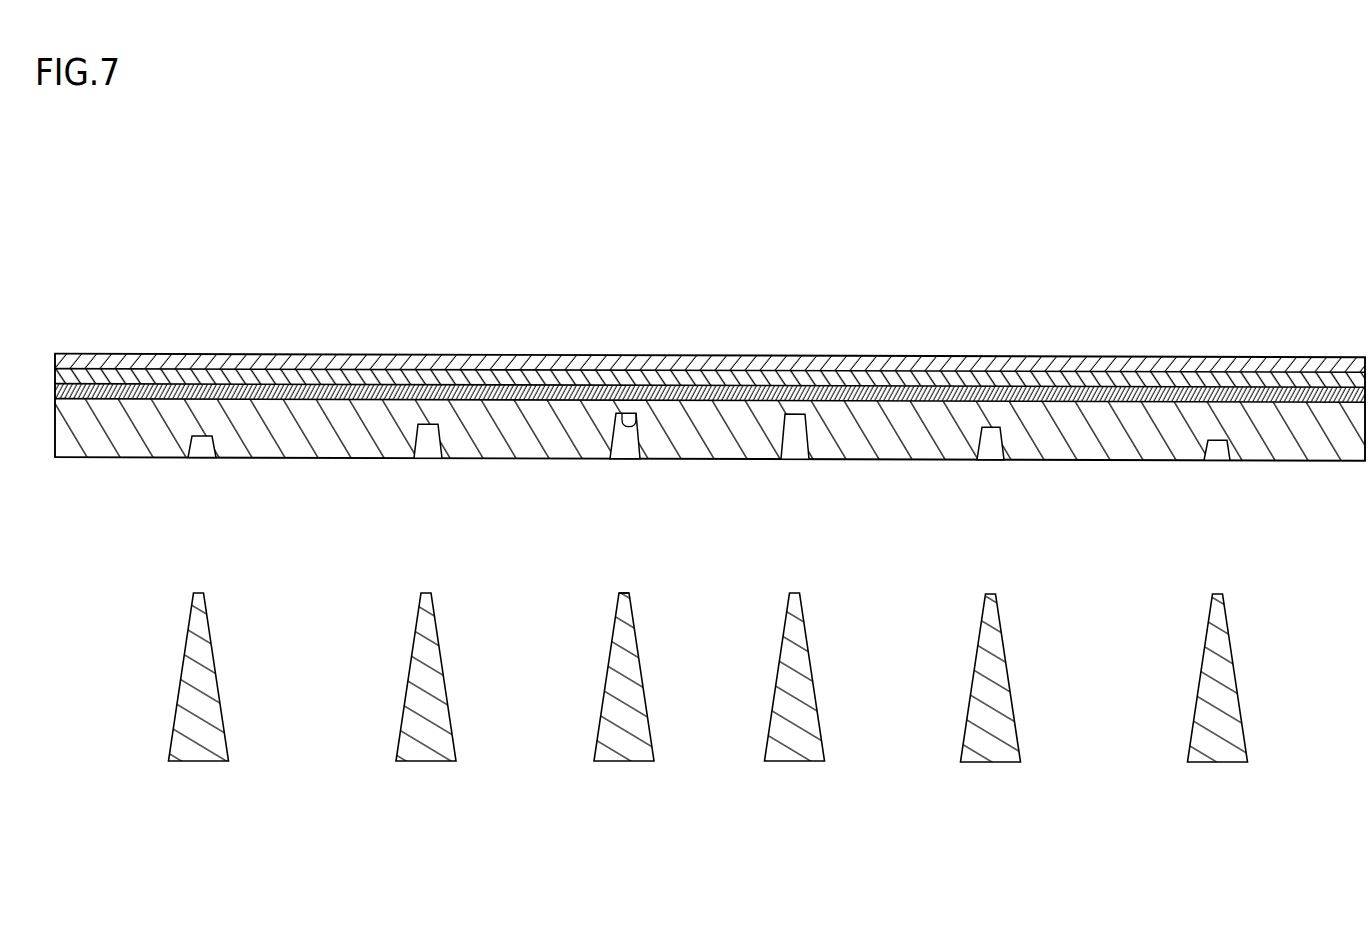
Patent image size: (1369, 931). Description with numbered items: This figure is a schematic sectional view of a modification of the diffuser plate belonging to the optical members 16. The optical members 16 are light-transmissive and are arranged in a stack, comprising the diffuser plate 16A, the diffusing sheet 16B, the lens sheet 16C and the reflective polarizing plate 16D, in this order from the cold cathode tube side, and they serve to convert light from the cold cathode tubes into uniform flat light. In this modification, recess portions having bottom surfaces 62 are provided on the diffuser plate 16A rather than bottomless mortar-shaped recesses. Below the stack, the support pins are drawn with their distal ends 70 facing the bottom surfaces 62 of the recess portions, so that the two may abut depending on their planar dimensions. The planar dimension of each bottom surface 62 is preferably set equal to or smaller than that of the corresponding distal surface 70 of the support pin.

The optical members 16 is at (710, 333).
The diffuser plate 16A is at (315, 258).
The diffusing sheet 16B is at (150, 388).
The lens sheet 16C is at (207, 375).
The reflective polarizing plate 16D is at (260, 363).
The bottom surface 62 is at (638, 421).
The distal end 70 is at (625, 592).